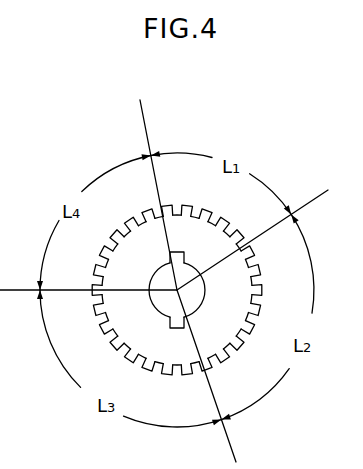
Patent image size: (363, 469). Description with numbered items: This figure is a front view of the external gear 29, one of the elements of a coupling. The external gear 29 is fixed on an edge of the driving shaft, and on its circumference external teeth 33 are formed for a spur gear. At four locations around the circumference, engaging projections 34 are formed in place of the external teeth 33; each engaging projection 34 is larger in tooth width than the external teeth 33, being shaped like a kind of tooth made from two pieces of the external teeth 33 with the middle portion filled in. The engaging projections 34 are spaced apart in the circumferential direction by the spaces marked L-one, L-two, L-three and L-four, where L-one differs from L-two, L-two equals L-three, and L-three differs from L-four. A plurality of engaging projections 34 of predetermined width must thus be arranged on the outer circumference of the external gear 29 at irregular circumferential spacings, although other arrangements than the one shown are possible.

The external gear 29 is at (167, 299).
The external teeth 33 is at (104, 256).
The engaging projections 34 is at (160, 206).